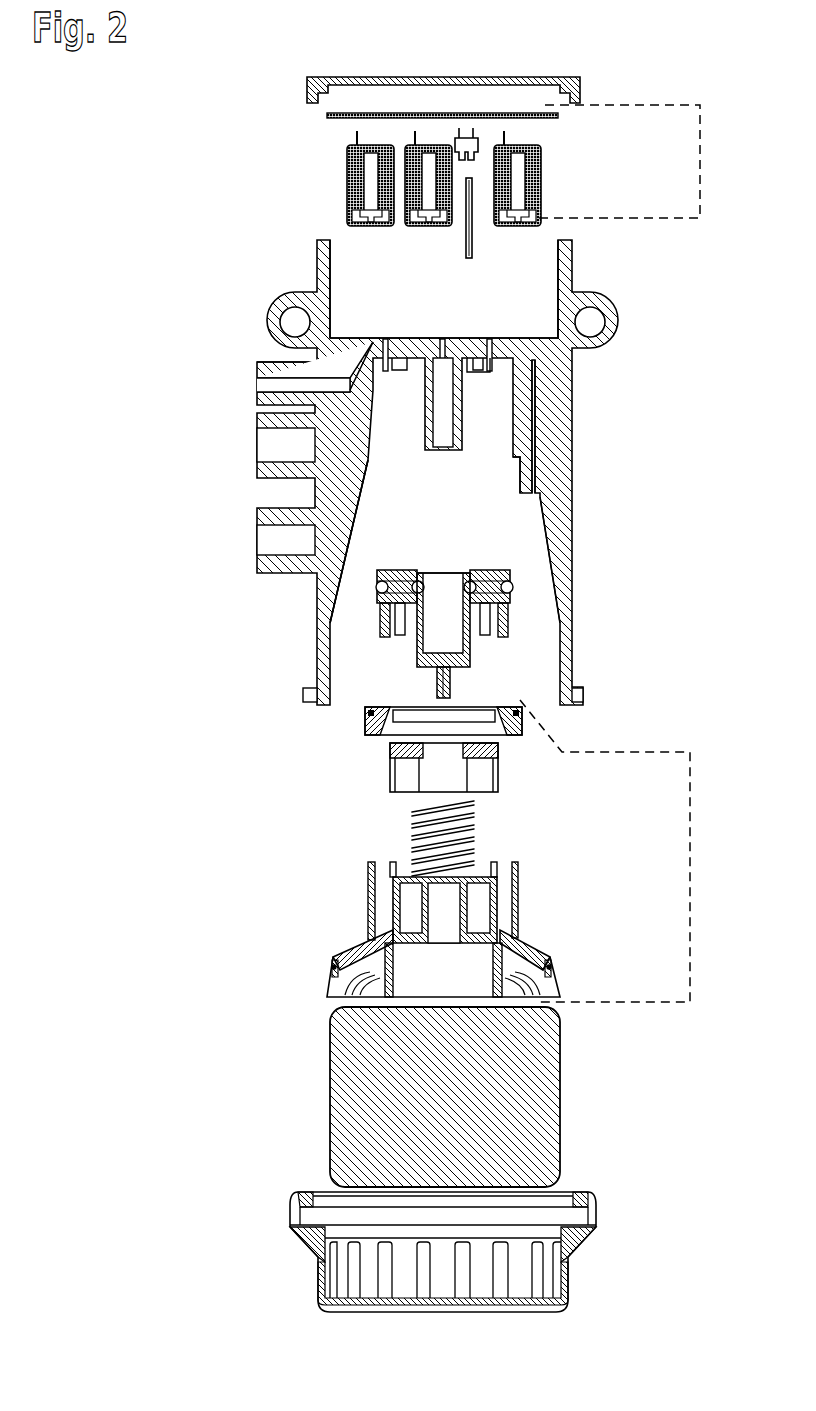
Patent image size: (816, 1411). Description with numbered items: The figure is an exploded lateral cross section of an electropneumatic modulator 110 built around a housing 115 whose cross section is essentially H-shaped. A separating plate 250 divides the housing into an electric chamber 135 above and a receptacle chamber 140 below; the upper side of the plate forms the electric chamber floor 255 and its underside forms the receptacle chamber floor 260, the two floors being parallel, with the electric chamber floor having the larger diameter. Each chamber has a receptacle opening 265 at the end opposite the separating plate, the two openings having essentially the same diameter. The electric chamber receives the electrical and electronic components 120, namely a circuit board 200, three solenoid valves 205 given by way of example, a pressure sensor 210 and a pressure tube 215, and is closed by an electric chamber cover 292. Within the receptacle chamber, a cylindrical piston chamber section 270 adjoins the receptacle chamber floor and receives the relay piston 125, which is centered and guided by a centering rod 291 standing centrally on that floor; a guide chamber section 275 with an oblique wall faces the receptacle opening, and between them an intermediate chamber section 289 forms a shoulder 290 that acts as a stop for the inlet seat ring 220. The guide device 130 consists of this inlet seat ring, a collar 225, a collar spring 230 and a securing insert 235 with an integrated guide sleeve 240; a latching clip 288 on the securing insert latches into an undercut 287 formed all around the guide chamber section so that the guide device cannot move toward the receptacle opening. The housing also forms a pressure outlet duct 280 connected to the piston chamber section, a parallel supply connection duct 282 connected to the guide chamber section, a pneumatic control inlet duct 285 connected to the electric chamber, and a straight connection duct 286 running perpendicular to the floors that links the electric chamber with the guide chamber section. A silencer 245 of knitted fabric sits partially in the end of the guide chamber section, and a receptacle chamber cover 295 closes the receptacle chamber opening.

The electropneumatic modulator 110 is at (616, 55).
The electrical and/or electronic components 120 is at (700, 105).
The electric chamber cover 292 is at (300, 85).
The circuit board 200 is at (320, 115).
The pressure sensor 210 is at (486, 132).
The solenoid valves 205 is at (330, 178).
The pressure tube 215 is at (484, 245).
The receptacle opening 265 is at (361, 266).
The electric chamber floor 255 is at (395, 336).
The electric chamber 135 is at (507, 293).
The separating plate 250 is at (503, 339).
The housing 115 is at (266, 352).
The pneumatic control inlet duct 285 is at (251, 384).
The centering rod 291 is at (445, 425).
The pressure outlet duct 280 is at (251, 452).
The supply connection duct 282 is at (251, 541).
The receptacle chamber 140 is at (376, 541).
The receptacle chamber floor 260 is at (480, 367).
The connection duct 286 is at (540, 416).
The piston chamber section 270 is at (488, 431).
The intermediate chamber section 289 is at (504, 480).
The shoulder 290 is at (378, 476).
The undercut 287 is at (338, 614).
The guide chamber section 275 is at (519, 555).
The relay piston 125 is at (483, 657).
The guide device 130 is at (690, 752).
The inlet seat ring 220 is at (360, 733).
The collar 225 is at (379, 786).
The collar spring 230 is at (485, 827).
The guide sleeve 240 is at (398, 904).
The securing insert 235 is at (301, 957).
The latching clip 288 is at (567, 993).
The silencer 245 is at (323, 1097).
The receptacle chamber cover 295 is at (289, 1232).